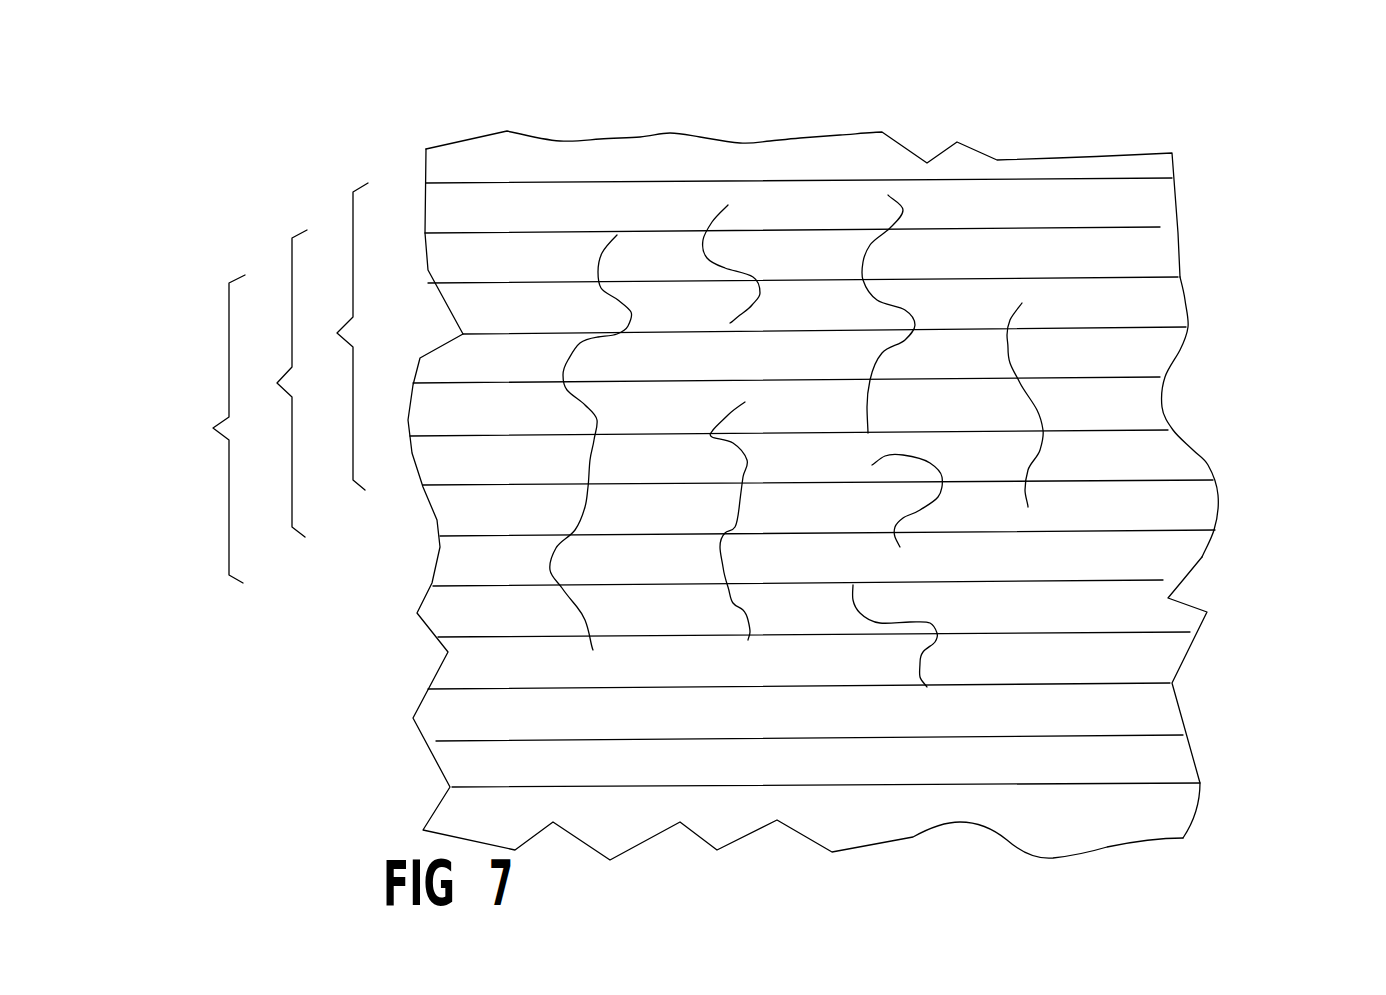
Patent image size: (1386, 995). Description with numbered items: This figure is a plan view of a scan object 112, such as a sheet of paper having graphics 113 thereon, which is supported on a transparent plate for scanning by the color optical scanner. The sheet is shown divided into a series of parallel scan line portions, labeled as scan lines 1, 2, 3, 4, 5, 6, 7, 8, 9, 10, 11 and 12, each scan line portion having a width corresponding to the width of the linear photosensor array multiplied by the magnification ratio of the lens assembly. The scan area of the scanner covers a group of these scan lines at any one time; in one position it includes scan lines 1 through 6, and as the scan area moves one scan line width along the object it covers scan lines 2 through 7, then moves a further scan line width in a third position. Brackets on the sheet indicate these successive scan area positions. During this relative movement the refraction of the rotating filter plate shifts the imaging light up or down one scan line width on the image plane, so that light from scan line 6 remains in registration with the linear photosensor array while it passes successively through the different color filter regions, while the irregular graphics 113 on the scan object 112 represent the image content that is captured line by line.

The scan line 1 is at (1153, 202).
The scan line 2 is at (1153, 255).
The scan line 3 is at (1167, 308).
The scan line 4 is at (1167, 347).
The scan line 5 is at (1148, 415).
The scan line 6 is at (1172, 453).
The scan line 7 is at (1192, 507).
The scan line 8 is at (1180, 552).
The scan line 9 is at (1158, 608).
The scan line 10 is at (1165, 658).
The scan line 11 is at (1168, 708).
The scan line 12 is at (1180, 763).
The scan object 112 is at (1205, 141).
The graphics 113 is at (863, 280).